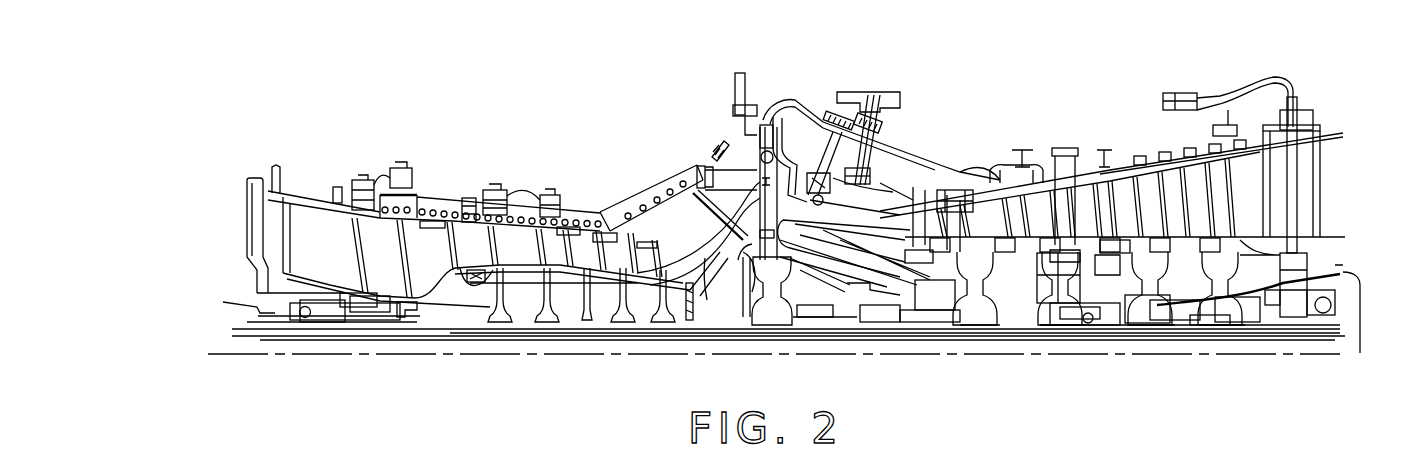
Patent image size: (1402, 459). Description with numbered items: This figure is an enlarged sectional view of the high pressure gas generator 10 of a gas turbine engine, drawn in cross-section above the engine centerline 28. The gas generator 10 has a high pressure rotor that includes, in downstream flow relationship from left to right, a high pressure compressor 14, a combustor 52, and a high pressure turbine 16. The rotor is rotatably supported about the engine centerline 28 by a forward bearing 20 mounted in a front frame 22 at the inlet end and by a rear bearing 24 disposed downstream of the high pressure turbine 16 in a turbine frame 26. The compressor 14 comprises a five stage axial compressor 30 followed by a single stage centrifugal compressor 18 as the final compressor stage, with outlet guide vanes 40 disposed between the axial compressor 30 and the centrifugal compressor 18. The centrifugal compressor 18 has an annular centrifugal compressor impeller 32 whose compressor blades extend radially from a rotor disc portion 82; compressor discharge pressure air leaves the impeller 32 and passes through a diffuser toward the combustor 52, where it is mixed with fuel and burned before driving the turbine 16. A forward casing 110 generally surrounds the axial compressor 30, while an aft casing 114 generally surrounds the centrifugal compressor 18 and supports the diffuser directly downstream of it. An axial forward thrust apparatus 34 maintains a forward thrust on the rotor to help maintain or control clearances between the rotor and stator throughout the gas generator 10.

The high pressure gas generator 10 is at (441, 391).
The high pressure compressor 14 is at (637, 212).
The high pressure turbine 16 is at (971, 158).
The single stage centrifugal compressor 18 is at (755, 266).
The forward bearing 20 is at (305, 318).
The front frame 22 is at (268, 293).
The rear bearing 24 is at (1090, 327).
The turbine frame 26 is at (1072, 230).
The engine centerline 28 is at (952, 358).
The five stage axial compressor 30 is at (588, 212).
The centrifugal compressor impeller 32 is at (727, 236).
The axial forward thrust apparatus 34 is at (847, 303).
The outlet guide vanes 40 is at (708, 270).
The combustor 52 is at (894, 150).
The rotor disc portion 82 is at (822, 217).
The forward casing 110 is at (607, 215).
The aft casing 114 is at (714, 158).